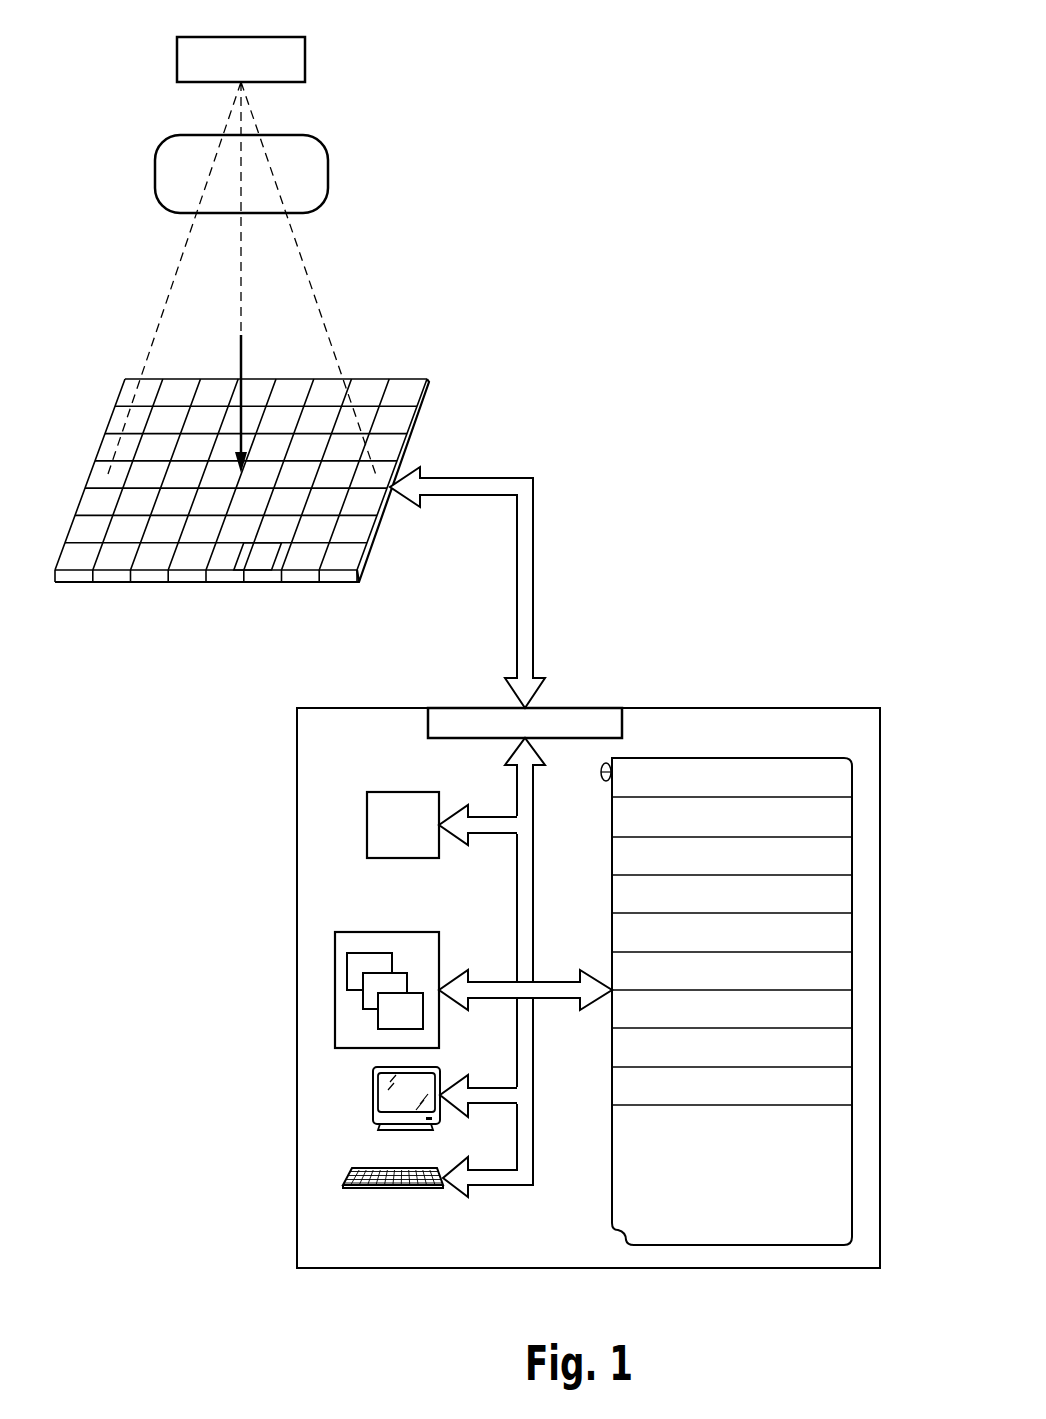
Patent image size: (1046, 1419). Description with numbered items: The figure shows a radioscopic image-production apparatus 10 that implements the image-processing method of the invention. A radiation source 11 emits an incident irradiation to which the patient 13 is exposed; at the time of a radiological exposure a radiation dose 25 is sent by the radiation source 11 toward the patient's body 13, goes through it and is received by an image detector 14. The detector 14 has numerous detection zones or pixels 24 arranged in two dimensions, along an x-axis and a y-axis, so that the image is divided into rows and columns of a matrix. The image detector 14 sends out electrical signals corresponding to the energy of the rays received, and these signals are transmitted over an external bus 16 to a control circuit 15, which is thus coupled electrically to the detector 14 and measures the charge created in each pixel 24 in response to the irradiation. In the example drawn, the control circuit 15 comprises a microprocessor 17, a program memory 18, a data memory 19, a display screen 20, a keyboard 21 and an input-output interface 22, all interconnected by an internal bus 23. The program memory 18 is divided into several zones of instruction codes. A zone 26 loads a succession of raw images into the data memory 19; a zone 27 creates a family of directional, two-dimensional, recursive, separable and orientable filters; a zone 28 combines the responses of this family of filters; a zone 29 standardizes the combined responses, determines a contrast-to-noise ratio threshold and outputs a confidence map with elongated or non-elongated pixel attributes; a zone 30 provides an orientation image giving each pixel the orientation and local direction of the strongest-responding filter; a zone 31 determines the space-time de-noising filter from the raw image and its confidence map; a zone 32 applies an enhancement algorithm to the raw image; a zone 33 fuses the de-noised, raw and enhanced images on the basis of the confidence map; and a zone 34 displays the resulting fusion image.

The production apparatus 10 is at (438, 219).
The radiation source 11 is at (307, 53).
The patient 13 is at (315, 175).
The image detector 14 is at (418, 422).
The control circuit 15 is at (482, 1268).
The external bus 16 is at (525, 567).
The microprocessor 17 is at (403, 792).
The program memory 18 is at (766, 952).
The data memory 19 is at (352, 932).
The display screen 20 is at (373, 1083).
The keyboard 21 is at (352, 1172).
The input-output interface 22 is at (583, 717).
The internal bus 23 is at (517, 897).
The pixels 24 is at (310, 558).
The radiation dose 25 is at (281, 313).
The zone 26 is at (837, 779).
The zone 27 is at (837, 819).
The zone 28 is at (837, 858).
The zone 29 is at (837, 896).
The zone 30 is at (837, 934).
The zone 31 is at (837, 973).
The zone 32 is at (837, 1011).
The zone 33 is at (837, 1049).
The zone 34 is at (837, 1088).